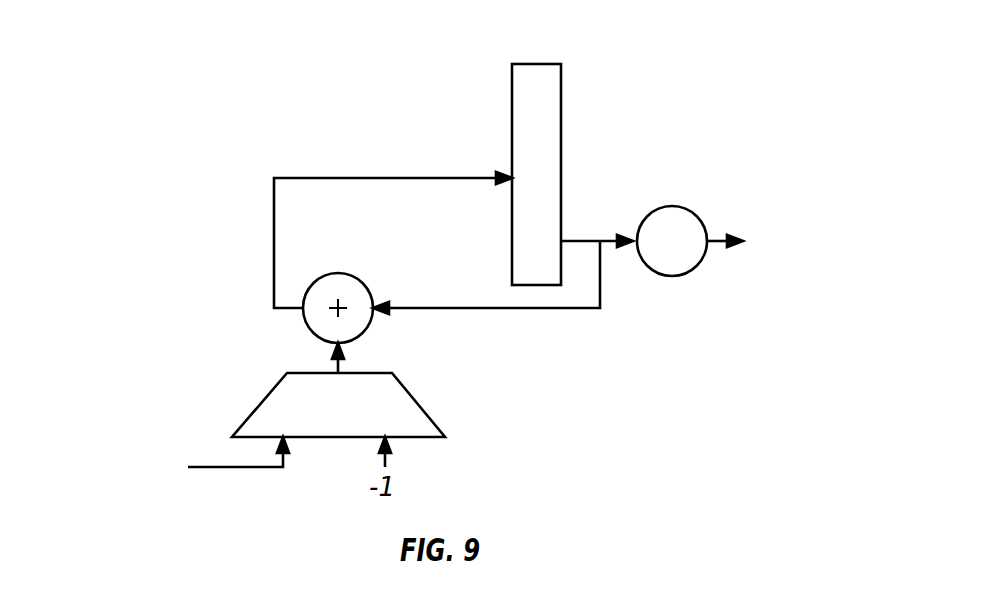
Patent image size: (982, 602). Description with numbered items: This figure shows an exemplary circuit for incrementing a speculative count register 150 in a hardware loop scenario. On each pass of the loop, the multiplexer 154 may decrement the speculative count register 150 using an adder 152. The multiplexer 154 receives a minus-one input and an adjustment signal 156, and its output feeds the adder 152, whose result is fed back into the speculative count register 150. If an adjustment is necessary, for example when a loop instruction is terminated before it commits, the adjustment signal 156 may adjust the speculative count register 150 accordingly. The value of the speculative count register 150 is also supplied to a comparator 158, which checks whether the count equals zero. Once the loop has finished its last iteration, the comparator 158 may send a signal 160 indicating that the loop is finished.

The speculative count register 150 is at (533, 64).
The adder 152 is at (357, 276).
The multiplexer 154 is at (272, 388).
The adjustment signal 156 is at (123, 427).
The comparator 158 is at (677, 207).
The signal 160 is at (807, 205).